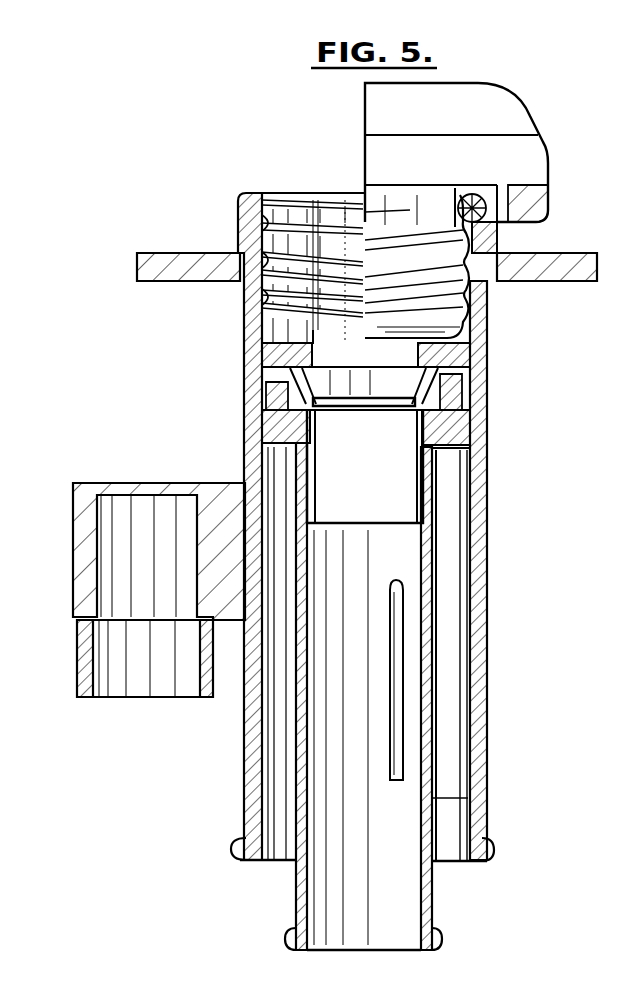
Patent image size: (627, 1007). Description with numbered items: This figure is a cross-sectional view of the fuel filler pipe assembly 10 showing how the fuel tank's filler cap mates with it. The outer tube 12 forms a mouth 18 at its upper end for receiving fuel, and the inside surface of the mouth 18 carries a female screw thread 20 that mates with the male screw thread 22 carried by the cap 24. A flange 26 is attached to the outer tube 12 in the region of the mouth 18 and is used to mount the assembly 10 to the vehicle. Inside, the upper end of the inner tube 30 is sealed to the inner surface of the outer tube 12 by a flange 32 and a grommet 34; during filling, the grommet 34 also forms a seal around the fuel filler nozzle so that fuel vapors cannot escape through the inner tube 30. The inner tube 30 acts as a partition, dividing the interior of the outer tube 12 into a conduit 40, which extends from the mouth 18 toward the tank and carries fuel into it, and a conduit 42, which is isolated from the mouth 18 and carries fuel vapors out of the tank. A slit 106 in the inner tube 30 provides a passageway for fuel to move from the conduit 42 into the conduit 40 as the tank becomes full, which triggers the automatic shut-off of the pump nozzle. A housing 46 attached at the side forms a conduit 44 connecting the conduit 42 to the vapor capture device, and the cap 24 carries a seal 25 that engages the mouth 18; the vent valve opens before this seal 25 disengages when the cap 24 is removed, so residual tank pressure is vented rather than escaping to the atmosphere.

The assembly 10 is at (349, 526).
The outer tube 12 is at (485, 528).
The mouth 18 is at (326, 233).
The female screw thread 20 is at (287, 283).
The male screw thread 22 is at (369, 241).
The cap 24 is at (518, 164).
The seal 25 is at (545, 196).
The flange 26 is at (562, 272).
The inner tube 30 is at (432, 798).
The flange 32 is at (445, 432).
The grommet 34 is at (457, 397).
The conduit 40 is at (400, 696).
The conduit 42 is at (285, 777).
The conduit 44 is at (145, 672).
The housing 46 is at (230, 507).
The slit 106 is at (390, 778).